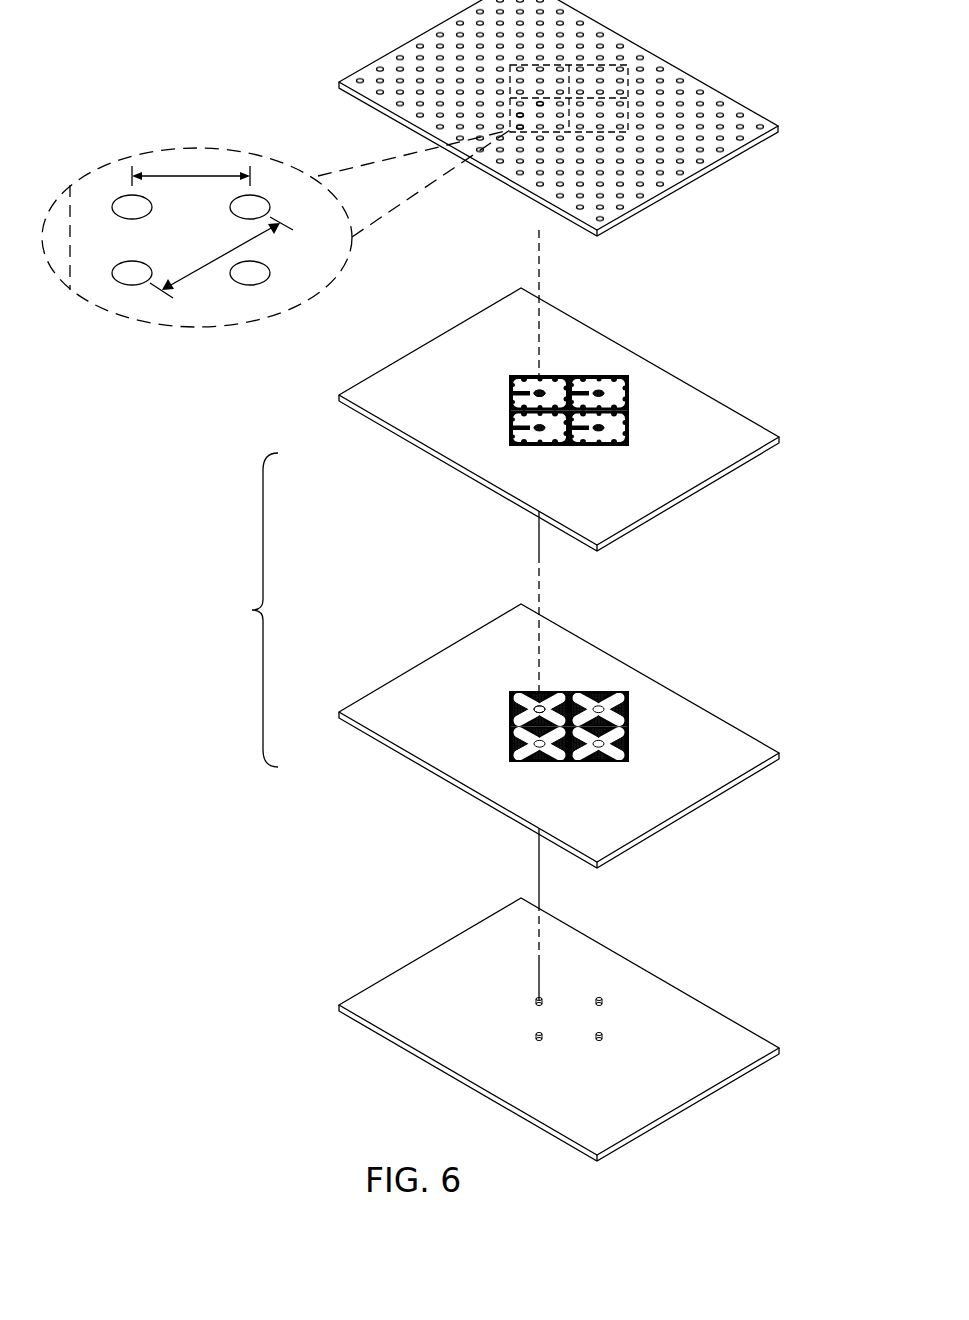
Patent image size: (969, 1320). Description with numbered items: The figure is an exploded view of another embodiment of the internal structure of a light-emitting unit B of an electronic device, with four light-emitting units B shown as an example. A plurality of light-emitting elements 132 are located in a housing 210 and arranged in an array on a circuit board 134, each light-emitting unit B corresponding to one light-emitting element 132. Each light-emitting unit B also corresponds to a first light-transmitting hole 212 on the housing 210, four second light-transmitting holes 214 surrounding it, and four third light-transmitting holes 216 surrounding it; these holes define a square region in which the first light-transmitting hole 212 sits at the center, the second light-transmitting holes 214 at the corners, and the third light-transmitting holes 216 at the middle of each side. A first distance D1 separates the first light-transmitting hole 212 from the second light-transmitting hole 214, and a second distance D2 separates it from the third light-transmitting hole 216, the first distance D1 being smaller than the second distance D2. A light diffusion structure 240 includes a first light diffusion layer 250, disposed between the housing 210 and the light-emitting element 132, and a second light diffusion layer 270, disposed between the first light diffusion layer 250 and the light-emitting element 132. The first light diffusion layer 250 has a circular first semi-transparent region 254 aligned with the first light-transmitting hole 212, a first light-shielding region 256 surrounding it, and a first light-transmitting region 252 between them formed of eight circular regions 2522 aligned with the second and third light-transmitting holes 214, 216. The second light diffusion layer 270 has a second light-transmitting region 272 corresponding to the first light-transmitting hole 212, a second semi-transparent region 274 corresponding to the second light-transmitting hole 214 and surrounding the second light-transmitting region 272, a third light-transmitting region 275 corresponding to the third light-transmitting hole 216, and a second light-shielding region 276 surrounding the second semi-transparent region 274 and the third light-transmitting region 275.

The housing 210 is at (718, 90).
The first light-transmitting hole 212 is at (268, 196).
The second light-transmitting hole 214 is at (113, 196).
The third light-transmitting hole 216 is at (122, 286).
The light diffusion structure 240 is at (244, 610).
The first light diffusion layer 250 is at (537, 397).
The first light-transmitting region 252 is at (528, 385).
The first semi-transparent region 254 is at (539, 390).
The first light-shielding region 256 is at (510, 400).
The circular region 2522 is at (510, 394).
The second light diffusion layer 270 is at (537, 715).
The second light-transmitting region 272 is at (539, 706).
The second semi-transparent region 274 is at (510, 710).
The third light-transmitting region 275 is at (528, 700).
The second light-shielding region 276 is at (510, 716).
The circuit board 134 is at (682, 990).
The light-emitting element 132 is at (536, 1002).
The light-emitting unit B is at (532, 134).
The first distance D1 is at (190, 175).
The second distance D2 is at (218, 260).